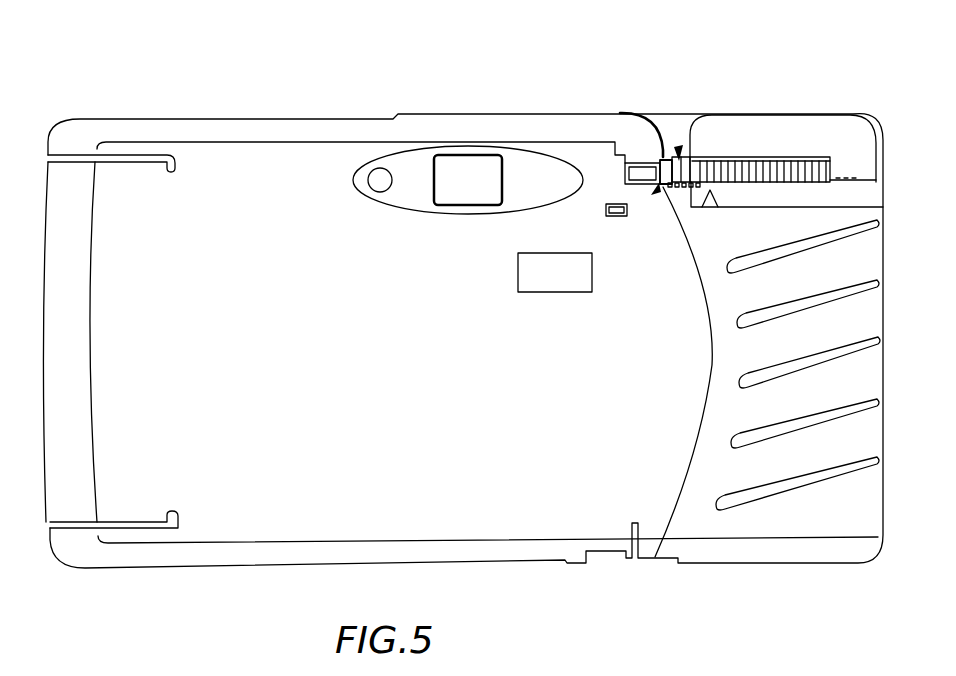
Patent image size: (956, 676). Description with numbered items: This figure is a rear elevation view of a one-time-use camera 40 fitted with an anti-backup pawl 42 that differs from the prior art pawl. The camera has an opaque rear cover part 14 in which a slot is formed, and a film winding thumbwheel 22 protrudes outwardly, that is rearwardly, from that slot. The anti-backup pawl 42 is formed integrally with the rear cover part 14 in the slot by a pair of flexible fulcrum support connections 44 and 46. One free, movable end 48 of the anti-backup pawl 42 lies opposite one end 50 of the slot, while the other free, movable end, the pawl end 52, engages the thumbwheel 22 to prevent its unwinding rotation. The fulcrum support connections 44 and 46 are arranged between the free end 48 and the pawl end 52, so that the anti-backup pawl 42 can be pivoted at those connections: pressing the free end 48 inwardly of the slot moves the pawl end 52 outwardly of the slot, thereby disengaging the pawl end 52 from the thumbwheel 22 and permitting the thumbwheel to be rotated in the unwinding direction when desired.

The one-time-use camera 40 is at (216, 100).
The opaque rear cover part 14 is at (65, 490).
The film winding thumbwheel 22 is at (776, 157).
The anti-backup pawl 42 is at (680, 146).
The flexible fulcrum support connection 44 is at (649, 157).
The flexible fulcrum support connection 46 is at (656, 190).
The free end 48 is at (661, 163).
The end of the slot 50 is at (626, 183).
The pawl end 52 is at (712, 196).